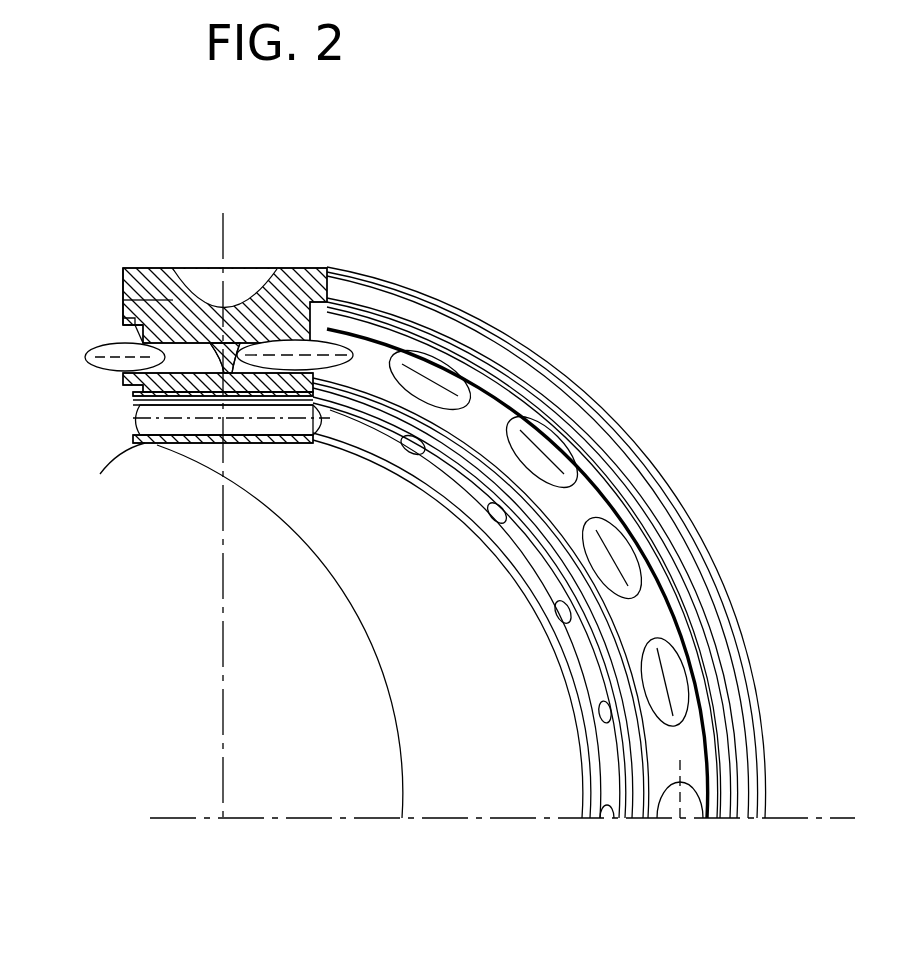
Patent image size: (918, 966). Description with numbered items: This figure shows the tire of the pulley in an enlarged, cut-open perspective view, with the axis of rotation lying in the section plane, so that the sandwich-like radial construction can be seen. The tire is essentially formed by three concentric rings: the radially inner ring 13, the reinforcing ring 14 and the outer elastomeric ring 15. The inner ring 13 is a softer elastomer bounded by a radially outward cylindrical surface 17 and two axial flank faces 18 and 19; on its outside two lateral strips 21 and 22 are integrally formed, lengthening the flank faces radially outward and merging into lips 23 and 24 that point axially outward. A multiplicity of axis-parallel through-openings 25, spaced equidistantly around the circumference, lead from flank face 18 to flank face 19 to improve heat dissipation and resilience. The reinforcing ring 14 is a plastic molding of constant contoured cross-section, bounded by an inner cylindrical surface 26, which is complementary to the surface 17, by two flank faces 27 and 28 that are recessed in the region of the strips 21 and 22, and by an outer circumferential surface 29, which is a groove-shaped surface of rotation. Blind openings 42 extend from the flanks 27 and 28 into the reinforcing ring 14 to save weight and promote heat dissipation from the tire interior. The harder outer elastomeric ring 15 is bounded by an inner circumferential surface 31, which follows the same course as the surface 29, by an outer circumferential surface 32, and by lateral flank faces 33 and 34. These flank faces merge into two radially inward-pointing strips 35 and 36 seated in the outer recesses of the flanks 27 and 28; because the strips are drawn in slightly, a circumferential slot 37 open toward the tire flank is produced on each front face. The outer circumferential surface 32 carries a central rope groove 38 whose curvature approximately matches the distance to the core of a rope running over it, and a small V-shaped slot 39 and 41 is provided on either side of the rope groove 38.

The inner ring 13 is at (345, 668).
The reinforcing ring 14 is at (593, 500).
The outer elastomeric ring 15 is at (588, 335).
The cylindrical surface 17 is at (133, 397).
The flank face 18 is at (367, 440).
The flank face 19 is at (138, 444).
The lateral strip 21 is at (123, 380).
The lateral strip 22 is at (343, 403).
The lip 23 is at (157, 352).
The lip 24 is at (391, 397).
The through-opening 25 is at (167, 446).
The cylindrical surface 26 is at (258, 445).
The flank face 27 is at (128, 320).
The flank face 28 is at (440, 297).
The outer circumferential surface 29 is at (201, 290).
The inner circumferential surface 31 is at (272, 269).
The outer circumferential surface 32 is at (172, 268).
The flank face 33 is at (362, 272).
The flank face 34 is at (120, 268).
The strip 35 is at (125, 298).
The strip 36 is at (420, 285).
The slot 37 is at (400, 318).
The rope groove 38 is at (237, 270).
The V-shaped slot 39 is at (322, 265).
The V-shaped slot 41 is at (152, 268).
The blind opening 42 is at (535, 445).